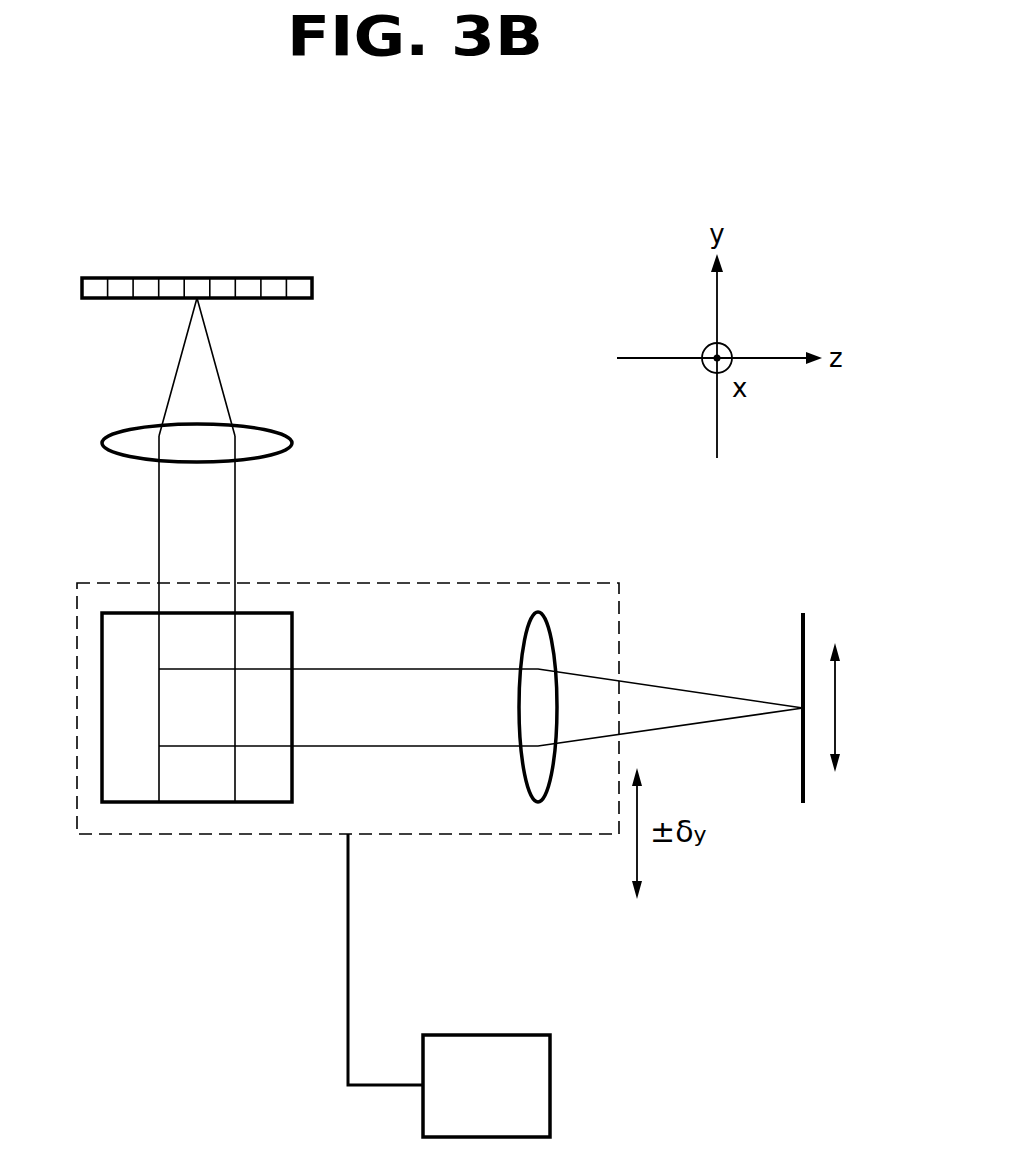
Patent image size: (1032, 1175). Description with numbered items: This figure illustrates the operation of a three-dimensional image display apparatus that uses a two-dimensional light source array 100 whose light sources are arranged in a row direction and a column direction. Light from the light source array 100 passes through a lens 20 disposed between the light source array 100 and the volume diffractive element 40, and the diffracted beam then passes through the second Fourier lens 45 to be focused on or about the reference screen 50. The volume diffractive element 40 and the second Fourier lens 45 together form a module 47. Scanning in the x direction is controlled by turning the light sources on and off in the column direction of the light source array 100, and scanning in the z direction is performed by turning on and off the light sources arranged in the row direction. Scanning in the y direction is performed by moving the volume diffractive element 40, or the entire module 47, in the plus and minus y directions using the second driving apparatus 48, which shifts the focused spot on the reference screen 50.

The light source array 100 is at (332, 278).
The lens 20 is at (292, 443).
The module 47 is at (585, 582).
The volume diffractive element 40 is at (128, 797).
The second Fourier lens 45 is at (538, 805).
The reference screen 50 is at (805, 630).
The second driving apparatus 48 is at (545, 1082).